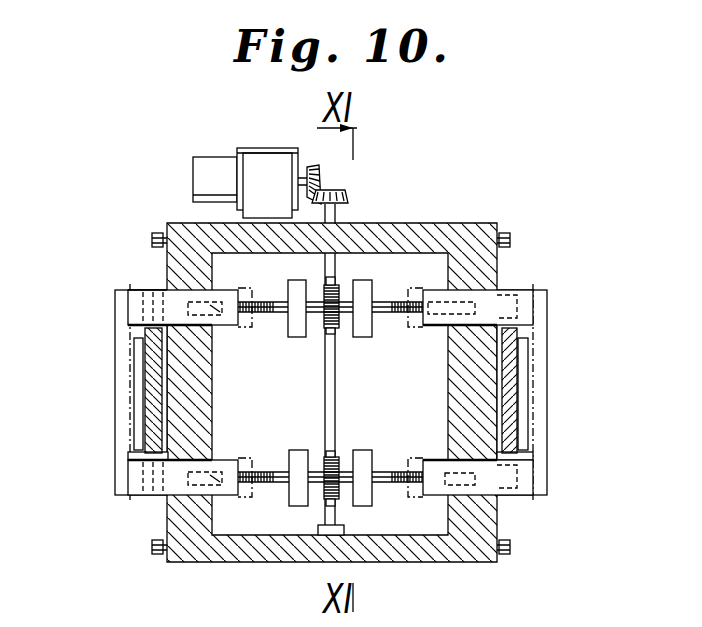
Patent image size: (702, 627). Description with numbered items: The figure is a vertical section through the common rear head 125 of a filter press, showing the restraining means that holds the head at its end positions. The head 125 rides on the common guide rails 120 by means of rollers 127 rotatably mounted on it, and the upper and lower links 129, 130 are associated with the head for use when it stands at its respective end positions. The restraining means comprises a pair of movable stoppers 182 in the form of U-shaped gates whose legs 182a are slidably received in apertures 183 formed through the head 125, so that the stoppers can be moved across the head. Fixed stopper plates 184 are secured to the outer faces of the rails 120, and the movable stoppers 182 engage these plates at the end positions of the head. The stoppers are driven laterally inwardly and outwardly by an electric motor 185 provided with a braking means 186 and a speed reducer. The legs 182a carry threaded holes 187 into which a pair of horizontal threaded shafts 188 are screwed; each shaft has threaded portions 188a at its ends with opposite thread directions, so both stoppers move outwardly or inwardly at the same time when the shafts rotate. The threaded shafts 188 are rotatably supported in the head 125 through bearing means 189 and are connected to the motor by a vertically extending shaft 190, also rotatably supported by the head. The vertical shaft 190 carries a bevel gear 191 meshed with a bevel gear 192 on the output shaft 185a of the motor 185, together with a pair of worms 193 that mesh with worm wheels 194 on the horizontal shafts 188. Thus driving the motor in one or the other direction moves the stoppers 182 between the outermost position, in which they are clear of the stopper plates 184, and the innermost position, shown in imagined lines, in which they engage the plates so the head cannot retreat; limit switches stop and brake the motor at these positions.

The guide rails 120 is at (140, 372).
The common rear head 125 is at (465, 228).
The rollers 127 is at (148, 308).
The upper links 129 is at (158, 232).
The lower links 130 is at (152, 547).
The movable stoppers 182 is at (115, 438).
The legs 182a is at (178, 294).
The apertures 183 is at (172, 278).
The stopper plates 184 is at (150, 387).
The electric motor 185 is at (249, 163).
The output shaft 185a is at (306, 172).
The braking means 186 is at (203, 168).
The threaded holes 187 is at (218, 313).
The threaded shafts 188 is at (385, 300).
The threaded portions 188a is at (258, 317).
The bearing means 189 is at (362, 325).
The vertical shaft 190 is at (325, 392).
The bevel gear 191 is at (347, 193).
The bevel gear 192 is at (322, 172).
The worms 193 is at (338, 280).
The worm wheels 194 is at (323, 330).